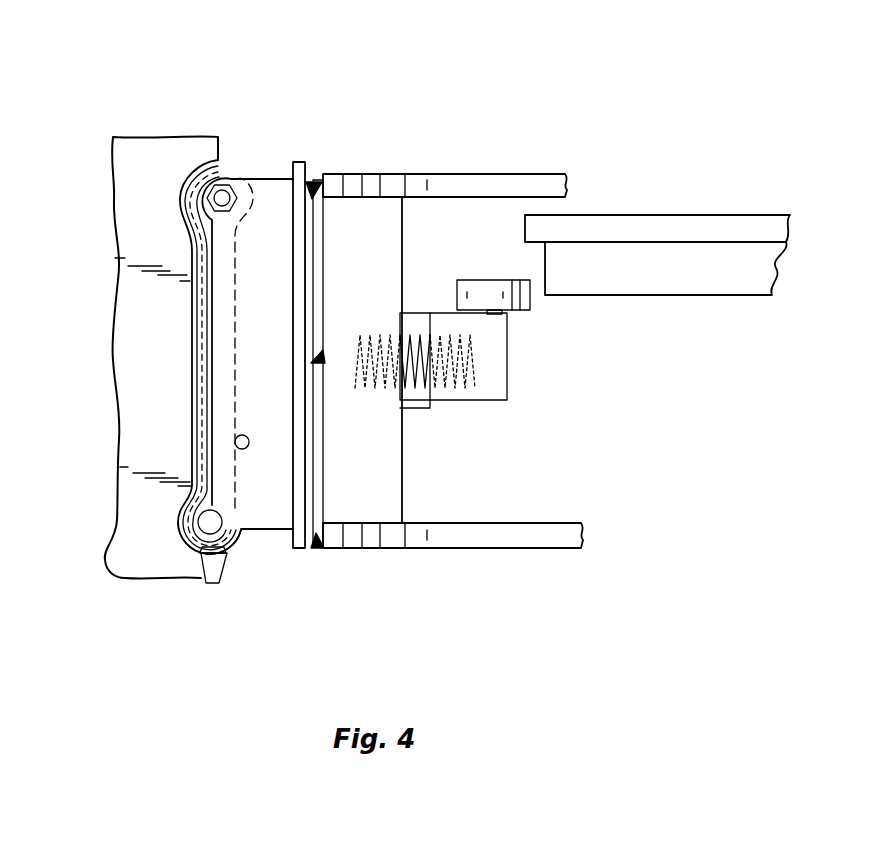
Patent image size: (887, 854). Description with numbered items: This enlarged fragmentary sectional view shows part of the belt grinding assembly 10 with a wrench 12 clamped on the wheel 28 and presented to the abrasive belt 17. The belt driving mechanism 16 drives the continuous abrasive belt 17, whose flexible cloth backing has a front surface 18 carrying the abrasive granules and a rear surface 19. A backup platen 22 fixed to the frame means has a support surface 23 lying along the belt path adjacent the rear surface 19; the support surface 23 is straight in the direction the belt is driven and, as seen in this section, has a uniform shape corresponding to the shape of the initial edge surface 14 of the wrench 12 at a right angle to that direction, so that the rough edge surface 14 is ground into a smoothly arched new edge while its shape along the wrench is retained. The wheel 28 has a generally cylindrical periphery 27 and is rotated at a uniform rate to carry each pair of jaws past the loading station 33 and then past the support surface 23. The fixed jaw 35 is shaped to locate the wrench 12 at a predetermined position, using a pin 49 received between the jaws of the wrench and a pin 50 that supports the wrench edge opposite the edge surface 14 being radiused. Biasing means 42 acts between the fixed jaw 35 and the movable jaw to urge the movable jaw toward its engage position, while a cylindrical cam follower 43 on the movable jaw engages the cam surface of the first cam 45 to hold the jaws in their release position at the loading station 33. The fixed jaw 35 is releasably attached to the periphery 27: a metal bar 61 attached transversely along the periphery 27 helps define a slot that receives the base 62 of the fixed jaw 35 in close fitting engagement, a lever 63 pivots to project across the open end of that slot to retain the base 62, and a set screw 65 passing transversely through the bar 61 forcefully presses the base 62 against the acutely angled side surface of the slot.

The belt grinding assembly 10 is at (494, 82).
The wrench 12 is at (197, 497).
The initial edge surface 14 is at (200, 433).
The belt driving mechanism 16 is at (157, 124).
The continuous abrasive belt 17 is at (200, 578).
The front surface 18 is at (203, 305).
The rear surface 19 is at (200, 320).
The backup platen 22 is at (133, 412).
The support surface 23 is at (222, 362).
The cylindrical periphery 27 is at (318, 184).
The wheel 28 is at (550, 545).
The loading station 33 is at (259, 577).
The fixed jaw 35 is at (273, 195).
The spring housing 42 is at (410, 400).
The cylindrical cam follower 43 is at (520, 310).
The first cam 45 is at (747, 282).
The pin 49 is at (227, 183).
The pin 50 is at (247, 433).
The metal bar 61 is at (318, 227).
The base 62 is at (312, 184).
The lever 63 is at (313, 549).
The set screw 65 is at (317, 357).